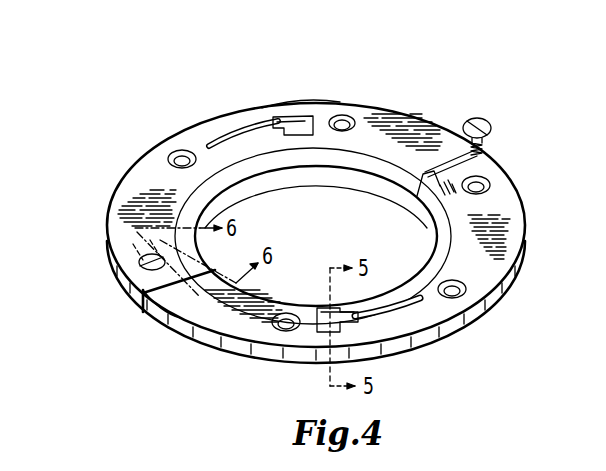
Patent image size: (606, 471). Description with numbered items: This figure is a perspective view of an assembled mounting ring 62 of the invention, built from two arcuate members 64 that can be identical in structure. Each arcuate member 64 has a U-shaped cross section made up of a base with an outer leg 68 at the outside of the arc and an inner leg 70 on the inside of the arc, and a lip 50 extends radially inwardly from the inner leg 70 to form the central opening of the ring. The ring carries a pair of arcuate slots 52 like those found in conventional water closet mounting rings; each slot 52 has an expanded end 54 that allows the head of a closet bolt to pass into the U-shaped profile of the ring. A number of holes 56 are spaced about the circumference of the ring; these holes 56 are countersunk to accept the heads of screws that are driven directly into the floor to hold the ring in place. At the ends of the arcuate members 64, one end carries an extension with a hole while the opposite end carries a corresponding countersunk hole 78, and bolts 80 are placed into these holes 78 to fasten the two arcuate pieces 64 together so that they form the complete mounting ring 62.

The lip 50 is at (373, 180).
The arcuate slot 52 is at (230, 133).
The expanded end 54 is at (314, 117).
The hole 56 is at (181, 150).
The mounting ring 62 is at (293, 92).
The arcuate member 64 is at (526, 237).
The outer leg 68 is at (198, 346).
The inner leg 70 is at (281, 152).
The countersunk hole 78 is at (481, 180).
The bolt 80 is at (486, 121).